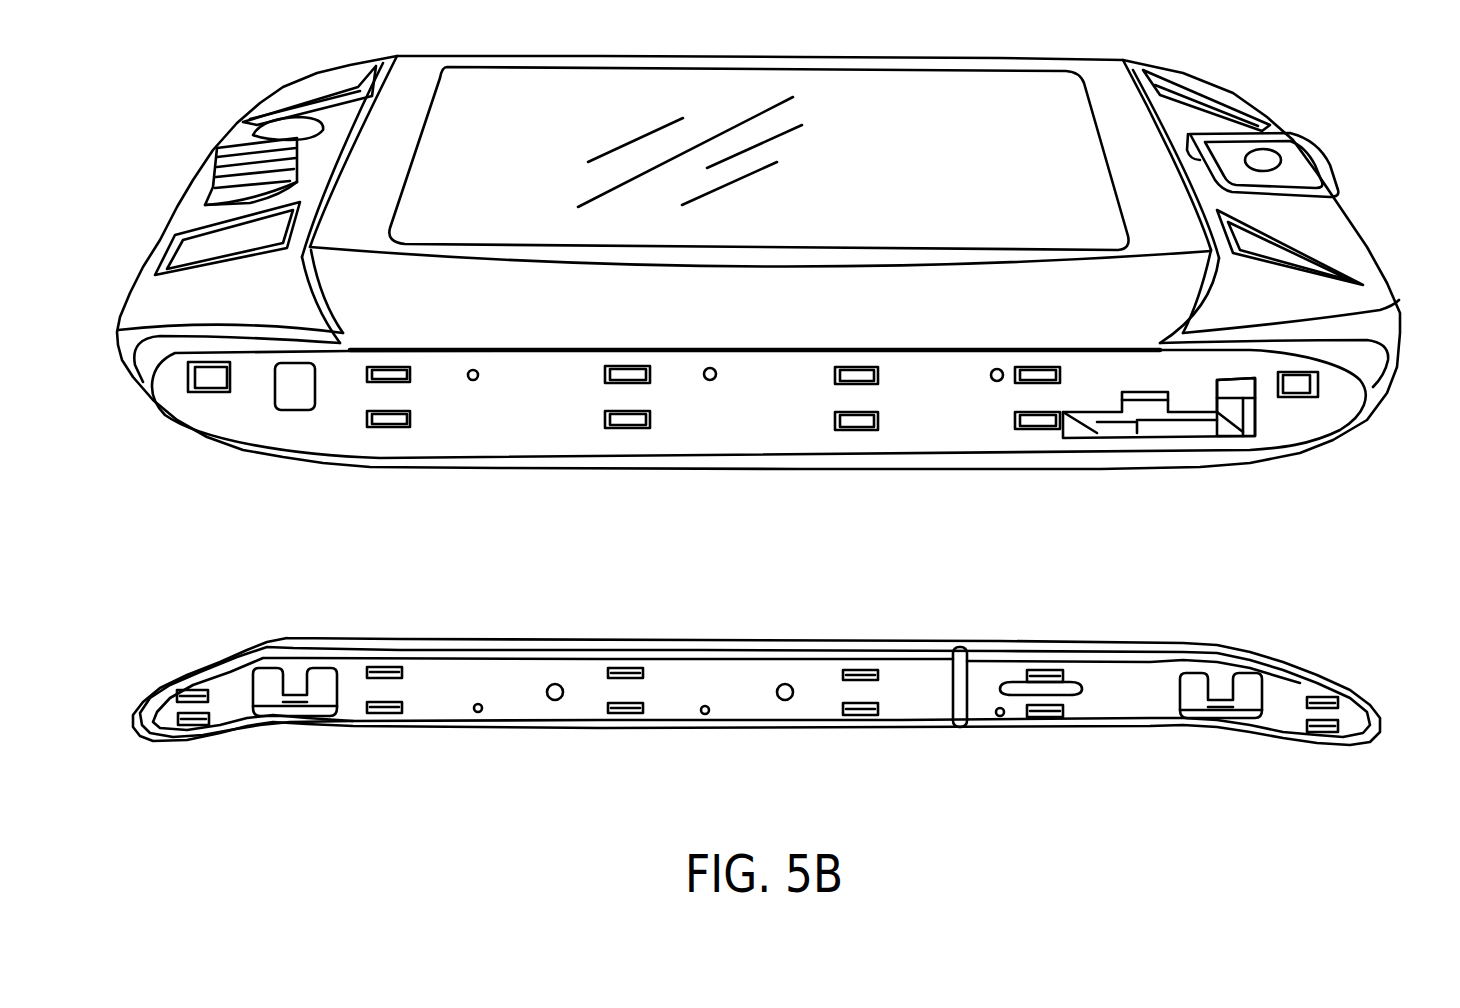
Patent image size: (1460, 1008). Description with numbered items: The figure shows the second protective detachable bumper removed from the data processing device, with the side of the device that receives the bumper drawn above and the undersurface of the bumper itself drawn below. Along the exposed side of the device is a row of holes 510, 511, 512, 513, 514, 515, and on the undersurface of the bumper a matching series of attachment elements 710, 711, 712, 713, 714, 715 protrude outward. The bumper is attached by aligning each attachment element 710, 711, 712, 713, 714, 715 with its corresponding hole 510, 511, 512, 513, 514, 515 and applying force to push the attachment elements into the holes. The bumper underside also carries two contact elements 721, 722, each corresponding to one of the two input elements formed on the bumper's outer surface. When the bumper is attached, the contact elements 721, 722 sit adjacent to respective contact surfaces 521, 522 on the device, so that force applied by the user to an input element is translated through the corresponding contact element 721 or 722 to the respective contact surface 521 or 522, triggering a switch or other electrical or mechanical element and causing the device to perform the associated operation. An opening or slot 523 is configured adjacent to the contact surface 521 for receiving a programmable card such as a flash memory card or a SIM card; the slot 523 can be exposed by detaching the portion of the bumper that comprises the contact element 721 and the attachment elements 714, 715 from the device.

The hole 510 is at (207, 378).
The hole 511 is at (372, 382).
The hole 512 is at (612, 383).
The hole 513 is at (840, 384).
The hole 514 is at (1025, 383).
The hole 515 is at (1297, 388).
The contact surface 521 is at (1233, 387).
The contact surface 522 is at (298, 395).
The slot 523 is at (1160, 423).
The attachment element 710 is at (182, 699).
The attachment element 711 is at (368, 675).
The attachment element 712 is at (608, 670).
The attachment element 713 is at (843, 673).
The attachment element 714 is at (1017, 678).
The attachment element 715 is at (1313, 703).
The contact element 721 is at (1217, 687).
The contact element 722 is at (290, 682).